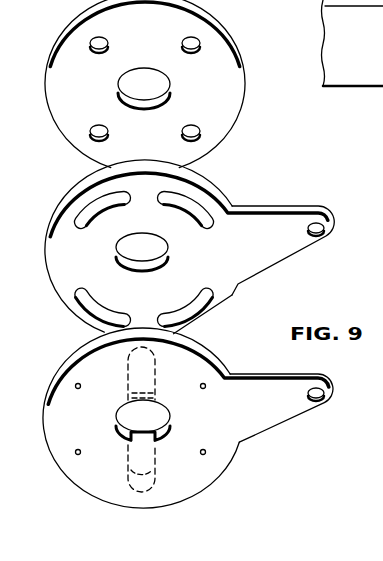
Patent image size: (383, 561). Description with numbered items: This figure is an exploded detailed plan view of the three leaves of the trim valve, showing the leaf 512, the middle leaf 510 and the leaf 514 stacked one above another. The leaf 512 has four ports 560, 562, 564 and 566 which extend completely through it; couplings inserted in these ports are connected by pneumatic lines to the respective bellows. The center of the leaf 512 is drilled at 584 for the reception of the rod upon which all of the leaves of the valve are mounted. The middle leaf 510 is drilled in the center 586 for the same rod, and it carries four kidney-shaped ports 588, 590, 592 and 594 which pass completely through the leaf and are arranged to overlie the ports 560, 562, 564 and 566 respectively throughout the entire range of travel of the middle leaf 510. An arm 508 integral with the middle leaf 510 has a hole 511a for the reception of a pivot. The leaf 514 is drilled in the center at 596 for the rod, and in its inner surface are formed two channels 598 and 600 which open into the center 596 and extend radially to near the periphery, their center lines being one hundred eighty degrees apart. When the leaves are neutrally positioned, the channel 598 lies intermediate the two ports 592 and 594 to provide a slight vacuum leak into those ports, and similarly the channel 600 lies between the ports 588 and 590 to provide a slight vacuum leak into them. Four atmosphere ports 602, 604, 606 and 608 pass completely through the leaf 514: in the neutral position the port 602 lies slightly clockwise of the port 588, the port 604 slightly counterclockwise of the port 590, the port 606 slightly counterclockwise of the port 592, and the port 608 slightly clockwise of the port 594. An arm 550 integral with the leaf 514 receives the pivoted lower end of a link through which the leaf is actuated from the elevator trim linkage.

The leaf 512 is at (236, 92).
The center drilling 584 is at (158, 91).
The port 560 is at (97, 129).
The port 562 is at (182, 134).
The port 564 is at (103, 40).
The port 566 is at (184, 45).
The arm 508 is at (295, 245).
The middle leaf 510 is at (222, 302).
The hole 511a is at (326, 231).
The center drilling 586 is at (160, 257).
The kidney-shaped port 588 is at (117, 300).
The kidney-shaped port 590 is at (190, 312).
The kidney-shaped port 592 is at (79, 227).
The kidney-shaped port 594 is at (215, 227).
The leaf 514 is at (205, 475).
The arm 550 is at (298, 405).
The center drilling 596 is at (118, 413).
The channel 598 is at (141, 370).
The channel 600 is at (143, 472).
The atmosphere port 602 is at (75, 452).
The atmosphere port 604 is at (206, 452).
The atmosphere port 606 is at (75, 386).
The atmosphere port 608 is at (206, 386).